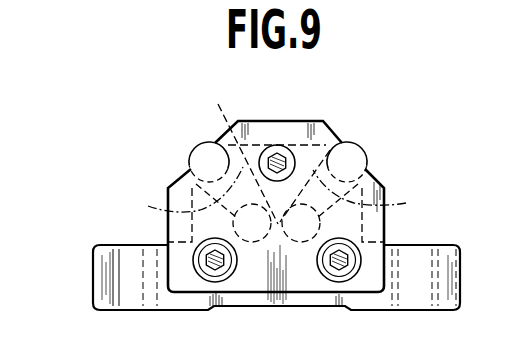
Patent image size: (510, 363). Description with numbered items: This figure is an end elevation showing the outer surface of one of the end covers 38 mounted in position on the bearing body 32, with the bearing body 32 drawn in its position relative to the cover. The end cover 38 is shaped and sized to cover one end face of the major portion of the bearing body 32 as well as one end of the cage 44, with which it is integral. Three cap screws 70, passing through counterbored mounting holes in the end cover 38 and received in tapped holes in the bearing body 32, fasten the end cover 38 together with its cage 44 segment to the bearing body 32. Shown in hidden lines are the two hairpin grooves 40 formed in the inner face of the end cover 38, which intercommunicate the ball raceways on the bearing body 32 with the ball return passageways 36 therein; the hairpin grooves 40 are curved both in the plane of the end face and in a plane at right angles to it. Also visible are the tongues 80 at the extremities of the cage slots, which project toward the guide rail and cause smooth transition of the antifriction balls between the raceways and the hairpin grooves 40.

The bearing body 32 is at (93, 262).
The end cover 38 is at (383, 132).
The tongues 80 is at (203, 145).
The cap screws 70 is at (281, 156).
The cage 44 is at (266, 154).
The hairpin grooves 40 is at (150, 207).
The ball return passageways 36 is at (268, 238).